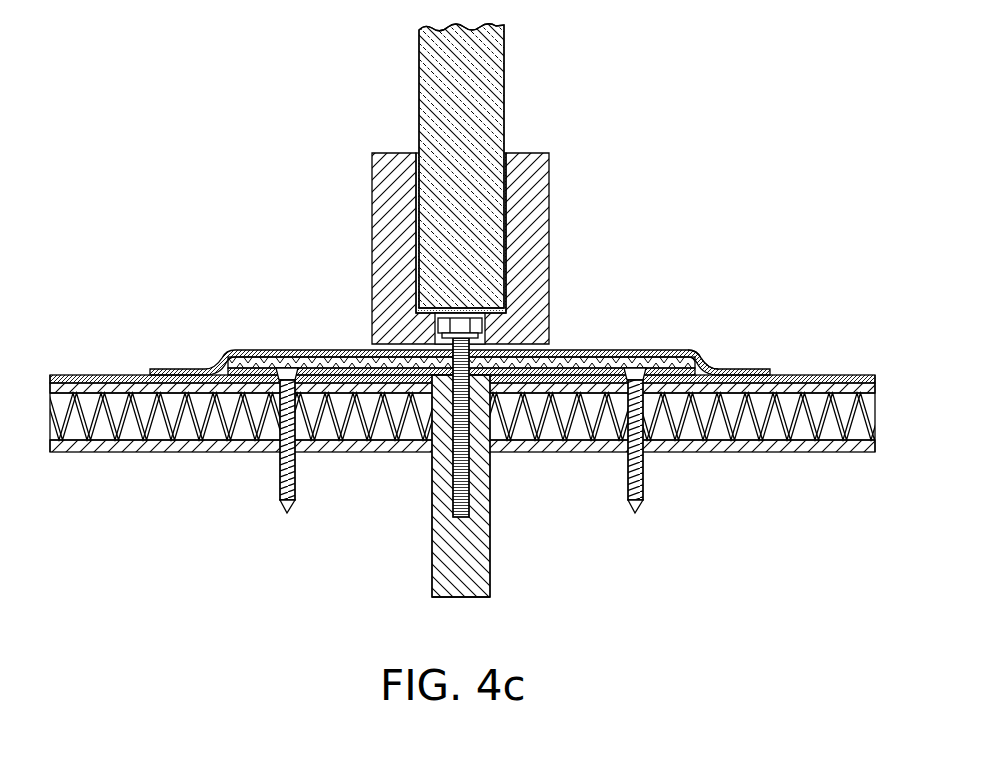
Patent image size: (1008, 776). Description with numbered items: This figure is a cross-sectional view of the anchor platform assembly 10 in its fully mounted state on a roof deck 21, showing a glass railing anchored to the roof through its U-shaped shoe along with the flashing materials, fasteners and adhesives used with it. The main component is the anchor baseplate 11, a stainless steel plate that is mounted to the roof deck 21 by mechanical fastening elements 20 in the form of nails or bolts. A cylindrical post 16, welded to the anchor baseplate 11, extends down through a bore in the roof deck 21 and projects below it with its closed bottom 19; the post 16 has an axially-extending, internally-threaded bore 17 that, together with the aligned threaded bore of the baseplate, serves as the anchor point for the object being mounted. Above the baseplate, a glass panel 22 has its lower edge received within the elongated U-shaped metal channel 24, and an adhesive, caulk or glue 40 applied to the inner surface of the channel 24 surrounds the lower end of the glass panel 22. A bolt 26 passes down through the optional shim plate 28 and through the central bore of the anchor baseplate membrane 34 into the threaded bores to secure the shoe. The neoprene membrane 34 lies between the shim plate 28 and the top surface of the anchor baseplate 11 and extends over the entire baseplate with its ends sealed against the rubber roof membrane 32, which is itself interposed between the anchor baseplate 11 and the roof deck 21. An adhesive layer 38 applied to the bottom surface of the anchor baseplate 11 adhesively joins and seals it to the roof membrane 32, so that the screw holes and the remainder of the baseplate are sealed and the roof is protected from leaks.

The anchor platform assembly 10 is at (208, 292).
The anchor baseplate 11 is at (330, 350).
The cylindrical post 16 is at (432, 530).
The internally-threaded bore 17 is at (461, 493).
The closed bottom 19 is at (458, 597).
The mechanical fastening elements 20 is at (283, 479).
The roof deck 21 is at (467, 426).
The glass panel 22 is at (492, 44).
The U-shaped metal channel 24 is at (372, 205).
The bolt 26 is at (483, 460).
The shim plate 28 is at (553, 347).
The rubber roof membrane 32 is at (818, 376).
The anchor baseplate membrane 34 is at (733, 367).
The adhesive layer 38 is at (665, 372).
The adhesive 40 is at (505, 190).